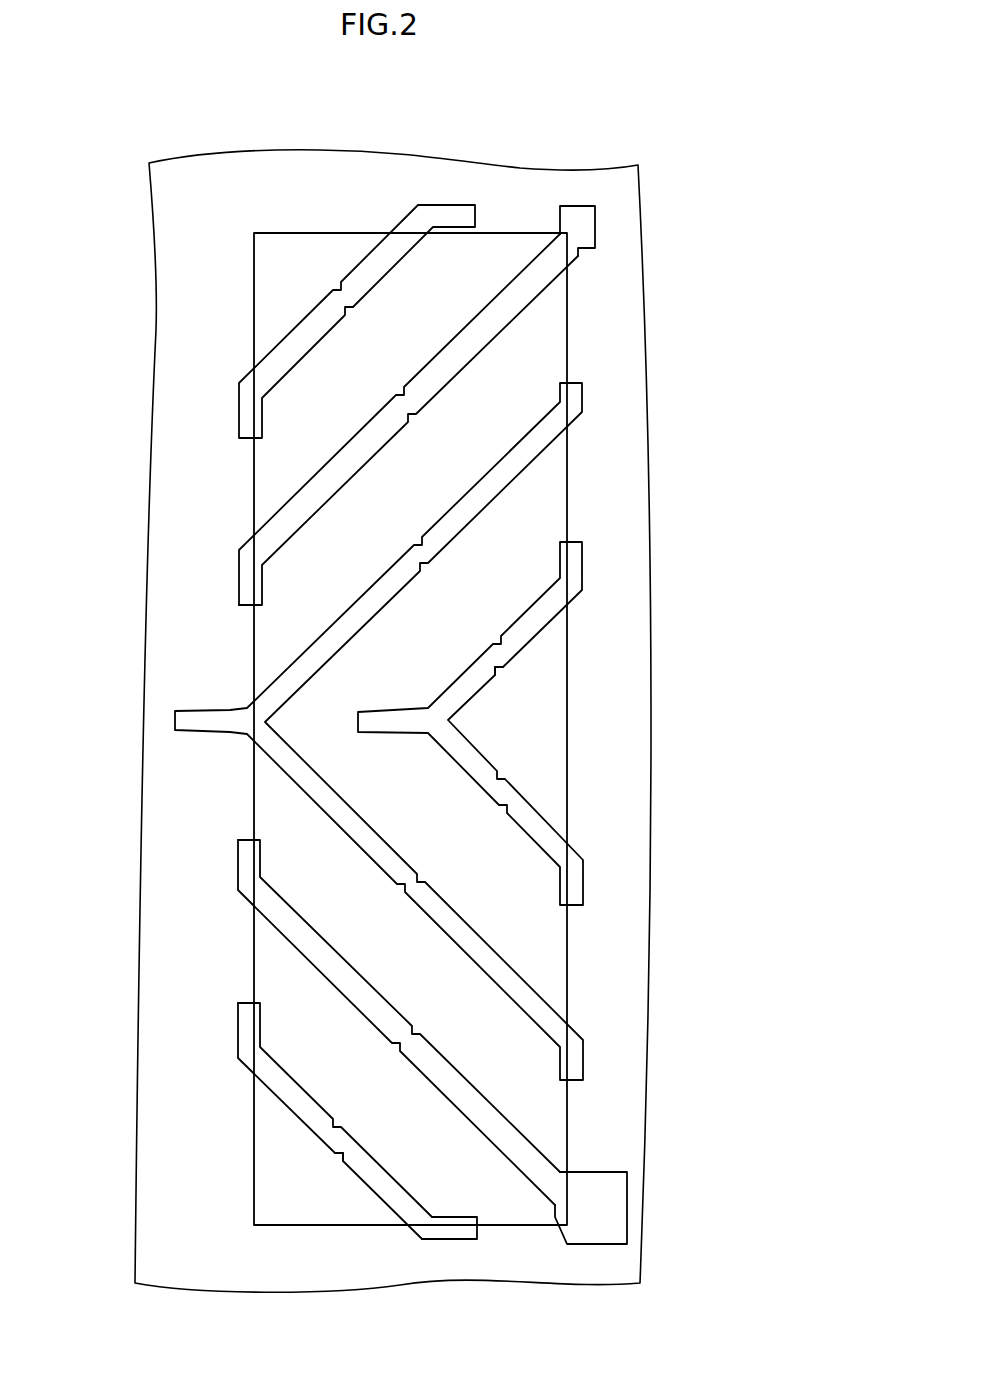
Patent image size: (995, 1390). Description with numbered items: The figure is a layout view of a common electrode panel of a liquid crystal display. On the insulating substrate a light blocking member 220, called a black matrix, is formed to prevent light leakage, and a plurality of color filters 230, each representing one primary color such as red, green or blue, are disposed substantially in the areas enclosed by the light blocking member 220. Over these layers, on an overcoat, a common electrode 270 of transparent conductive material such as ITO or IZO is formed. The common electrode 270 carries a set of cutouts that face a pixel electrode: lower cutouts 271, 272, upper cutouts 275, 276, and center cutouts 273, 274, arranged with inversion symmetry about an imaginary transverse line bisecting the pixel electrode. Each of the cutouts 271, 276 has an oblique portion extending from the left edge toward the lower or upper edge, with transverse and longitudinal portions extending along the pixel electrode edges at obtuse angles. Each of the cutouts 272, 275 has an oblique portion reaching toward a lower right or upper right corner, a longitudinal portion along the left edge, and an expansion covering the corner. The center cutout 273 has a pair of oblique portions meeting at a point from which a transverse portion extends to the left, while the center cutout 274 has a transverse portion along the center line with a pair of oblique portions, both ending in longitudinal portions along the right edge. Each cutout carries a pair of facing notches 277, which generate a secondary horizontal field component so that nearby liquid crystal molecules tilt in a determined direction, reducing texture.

The light blocking member 220 is at (568, 713).
The color filters 230 is at (650, 296).
The common electrode 270 is at (516, 210).
The lower cutout 271 is at (347, 1185).
The lower cutout 272 is at (527, 1185).
The center cutout 273 is at (540, 985).
The center cutout 274 is at (535, 810).
The upper cutout 275 is at (465, 320).
The upper cutout 276 is at (401, 215).
The notch 277 is at (505, 662).